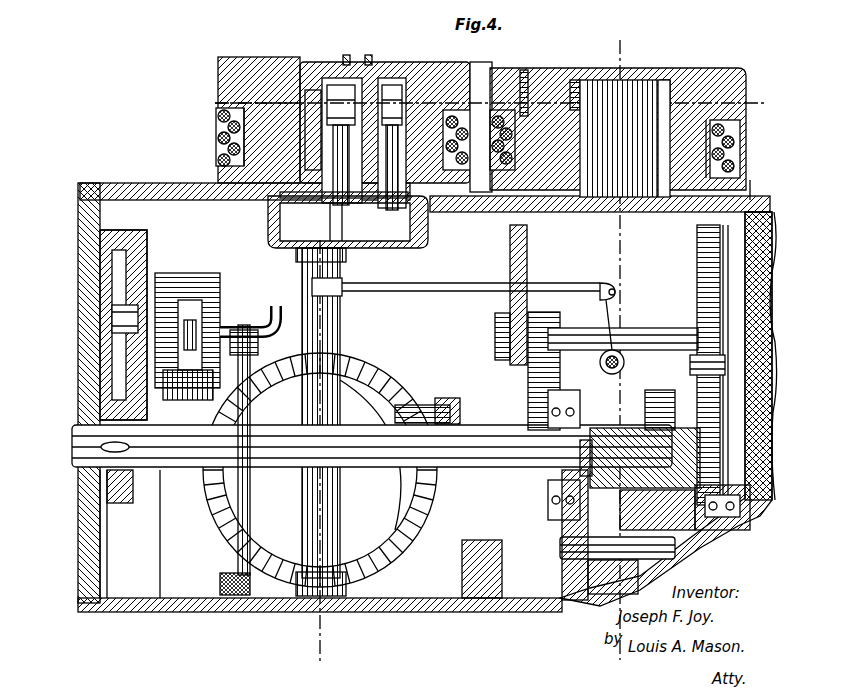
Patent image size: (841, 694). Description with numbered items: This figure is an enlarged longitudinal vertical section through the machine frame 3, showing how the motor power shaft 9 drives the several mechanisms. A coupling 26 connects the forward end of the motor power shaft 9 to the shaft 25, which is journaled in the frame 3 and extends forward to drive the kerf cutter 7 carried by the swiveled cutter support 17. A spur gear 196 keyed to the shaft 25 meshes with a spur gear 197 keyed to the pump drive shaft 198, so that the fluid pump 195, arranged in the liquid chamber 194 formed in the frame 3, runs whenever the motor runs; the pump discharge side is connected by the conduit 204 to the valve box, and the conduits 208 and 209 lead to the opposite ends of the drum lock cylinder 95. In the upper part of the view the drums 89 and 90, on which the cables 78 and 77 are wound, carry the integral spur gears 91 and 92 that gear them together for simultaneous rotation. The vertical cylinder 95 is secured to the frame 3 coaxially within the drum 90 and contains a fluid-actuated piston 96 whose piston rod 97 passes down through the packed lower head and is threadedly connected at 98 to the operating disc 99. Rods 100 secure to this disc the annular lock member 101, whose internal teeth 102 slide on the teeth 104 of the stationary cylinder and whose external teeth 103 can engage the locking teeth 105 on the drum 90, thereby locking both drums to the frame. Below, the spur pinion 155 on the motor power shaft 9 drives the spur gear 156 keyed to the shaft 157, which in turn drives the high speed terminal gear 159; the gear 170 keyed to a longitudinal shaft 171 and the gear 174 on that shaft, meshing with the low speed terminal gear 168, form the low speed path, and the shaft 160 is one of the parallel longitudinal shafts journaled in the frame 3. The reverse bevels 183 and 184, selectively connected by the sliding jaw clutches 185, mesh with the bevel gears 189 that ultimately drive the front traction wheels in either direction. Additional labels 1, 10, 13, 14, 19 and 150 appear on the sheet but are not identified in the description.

The housing 1 is at (165, 619).
The machine frame 3 is at (272, 618).
The kerf cutter 7 is at (230, 93).
The motor power shaft 9 is at (734, 510).
The section line 10 is at (80, 222).
The vertical shaft 13 is at (305, 228).
The section line 14 is at (750, 190).
The cutter support 17 is at (160, 7).
The fragment 19 is at (824, 7).
The shaft 25 is at (406, 404).
The coupling 26 is at (606, 426).
The cable 77 is at (216, 140).
The cable 78 is at (740, 142).
The drum 89 is at (740, 160).
The drum 90 is at (220, 150).
The spur gear 91 is at (745, 92).
The spur gear 92 is at (222, 100).
The vertical cylinder 95 is at (338, 80).
The fluid-actuated piston 96 is at (378, 85).
The piston rod 97 is at (396, 208).
The threaded connection 98 is at (302, 210).
The operating disc 99 is at (268, 228).
The rods 100 is at (440, 212).
The annular lock member 101 is at (318, 85).
The internal locking teeth 102 is at (452, 110).
The external locking teeth 103 is at (290, 95).
The teeth 104 is at (268, 210).
The locking teeth 105 is at (460, 185).
The bearing housing 150 is at (465, 626).
The spur pinion 155 is at (588, 424).
The spur gear 156 is at (668, 522).
The shaft 157 is at (538, 558).
The spur gear 159 is at (650, 396).
The shaft 160 is at (582, 605).
The spur gear 168 is at (522, 378).
The gear 170 is at (702, 256).
The longitudinal shafts 171 is at (648, 332).
The gear 174 is at (565, 300).
The reverse bevel 183 is at (432, 414).
The reverse bevel 184 is at (232, 540).
The sliding jaw clutches 185 is at (395, 548).
The bevel gears 189 is at (360, 362).
The chamber 194 is at (205, 592).
The fluid pump 195 is at (192, 273).
The spur gear 196 is at (112, 505).
The spur gear 197 is at (110, 362).
The pump drive shaft 198 is at (115, 320).
The conduit 204 is at (274, 308).
The conduit 208 is at (348, 55).
The conduit 209 is at (368, 55).